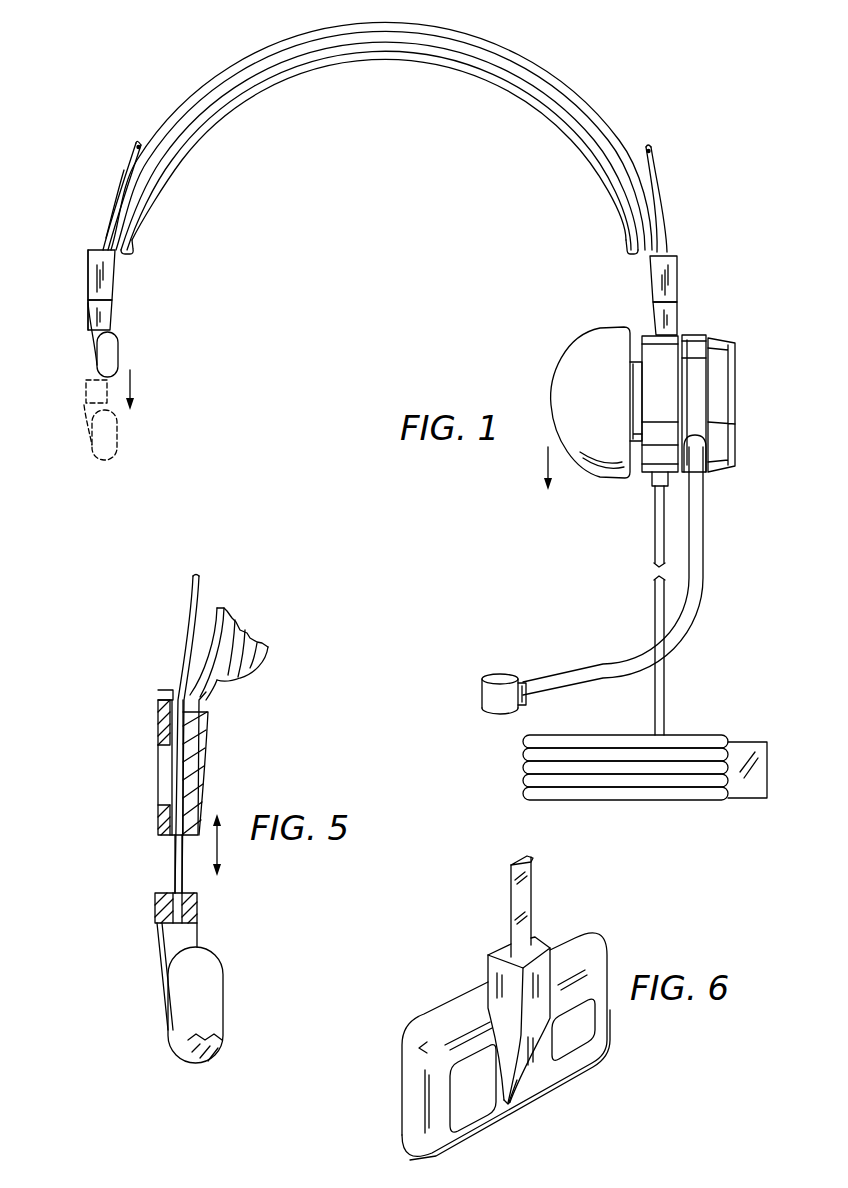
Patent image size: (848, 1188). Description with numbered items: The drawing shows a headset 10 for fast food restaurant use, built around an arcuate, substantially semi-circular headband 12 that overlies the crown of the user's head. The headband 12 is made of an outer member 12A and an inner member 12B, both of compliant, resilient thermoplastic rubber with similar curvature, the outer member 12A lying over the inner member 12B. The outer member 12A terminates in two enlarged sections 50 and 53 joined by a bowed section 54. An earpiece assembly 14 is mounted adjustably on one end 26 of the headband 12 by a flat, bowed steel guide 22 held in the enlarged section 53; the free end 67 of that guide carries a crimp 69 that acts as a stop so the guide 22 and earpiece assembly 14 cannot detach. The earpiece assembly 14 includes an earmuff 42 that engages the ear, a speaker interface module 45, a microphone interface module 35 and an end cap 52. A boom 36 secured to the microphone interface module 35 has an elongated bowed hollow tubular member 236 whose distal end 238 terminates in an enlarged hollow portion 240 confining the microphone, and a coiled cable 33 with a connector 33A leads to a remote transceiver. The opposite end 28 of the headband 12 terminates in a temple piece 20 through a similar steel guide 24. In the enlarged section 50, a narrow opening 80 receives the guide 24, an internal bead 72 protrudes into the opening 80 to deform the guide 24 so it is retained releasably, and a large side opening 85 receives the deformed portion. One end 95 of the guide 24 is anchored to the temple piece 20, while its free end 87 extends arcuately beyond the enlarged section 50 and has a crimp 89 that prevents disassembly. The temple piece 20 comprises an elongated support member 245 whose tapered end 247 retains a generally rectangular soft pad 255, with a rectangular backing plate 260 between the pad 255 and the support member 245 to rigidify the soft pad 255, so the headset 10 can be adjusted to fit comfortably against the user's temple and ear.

In FIG. 1, the headset 10 is at (148, 66).
In FIG. 1, the headband 12 is at (265, 46).
In FIG. 1, the outer member 12A is at (553, 86).
In FIG. 5, the outer member 12A is at (222, 630).
In FIG. 1, the inner member 12B is at (580, 130).
In FIG. 5, the inner member 12B is at (230, 658).
In FIG. 1, the bowed section 54 is at (455, 30).
In FIG. 1, the earpiece assembly 14 is at (740, 318).
In FIG. 1, the temple piece 20 is at (68, 376).
In FIG. 5, the temple piece 20 is at (146, 965).
In FIG. 6, the temple piece 20 is at (675, 912).
In FIG. 1, the guide 22 is at (694, 204).
In FIG. 1, the guide 24 is at (122, 150).
In FIG. 5, the guide 24 is at (172, 592).
In FIG. 6, the guide 24 is at (527, 885).
In FIG. 1, the end 26 is at (686, 293).
In FIG. 1, the end 28 is at (88, 283).
In FIG. 5, the end 28 is at (172, 868).
In FIG. 1, the cable 33 is at (667, 698).
In FIG. 1, the connector 33A is at (752, 799).
In FIG. 1, the microphone interface module 35 is at (692, 400).
In FIG. 1, the boom 36 is at (714, 562).
In FIG. 1, the earmuff 42 is at (600, 460).
In FIG. 1, the speaker interface module 45 is at (665, 390).
In FIG. 1, the enlarged section 50 is at (95, 262).
In FIG. 5, the enlarged section 50 is at (152, 716).
In FIG. 1, the end cap 52 is at (97, 316).
In FIG. 5, the end cap 52 is at (158, 912).
In FIG. 1, the enlarged section 53 is at (680, 272).
In FIG. 1, the free end 67 is at (664, 174).
In FIG. 1, the crimp 69 is at (652, 150).
In FIG. 5, the internal bead 72 is at (178, 770).
In FIG. 5, the narrow opening 80 is at (160, 815).
In FIG. 5, the large side opening 85 is at (158, 758).
In FIG. 1, the free end 87 is at (118, 170).
In FIG. 1, the crimp 89 is at (139, 143).
In FIG. 5, the end 95 is at (198, 900).
In FIG. 1, the tubular member 236 is at (685, 620).
In FIG. 1, the distal end 238 is at (540, 700).
In FIG. 1, the enlarged hollow portion 240 is at (485, 691).
In FIG. 5, the support member 245 is at (170, 958).
In FIG. 6, the support member 245 is at (540, 1045).
In FIG. 6, the tapered end 247 is at (527, 1080).
In FIG. 5, the pad 255 is at (205, 1013).
In FIG. 6, the pad 255 is at (405, 1078).
In FIG. 6, the backing plate 260 is at (470, 1105).